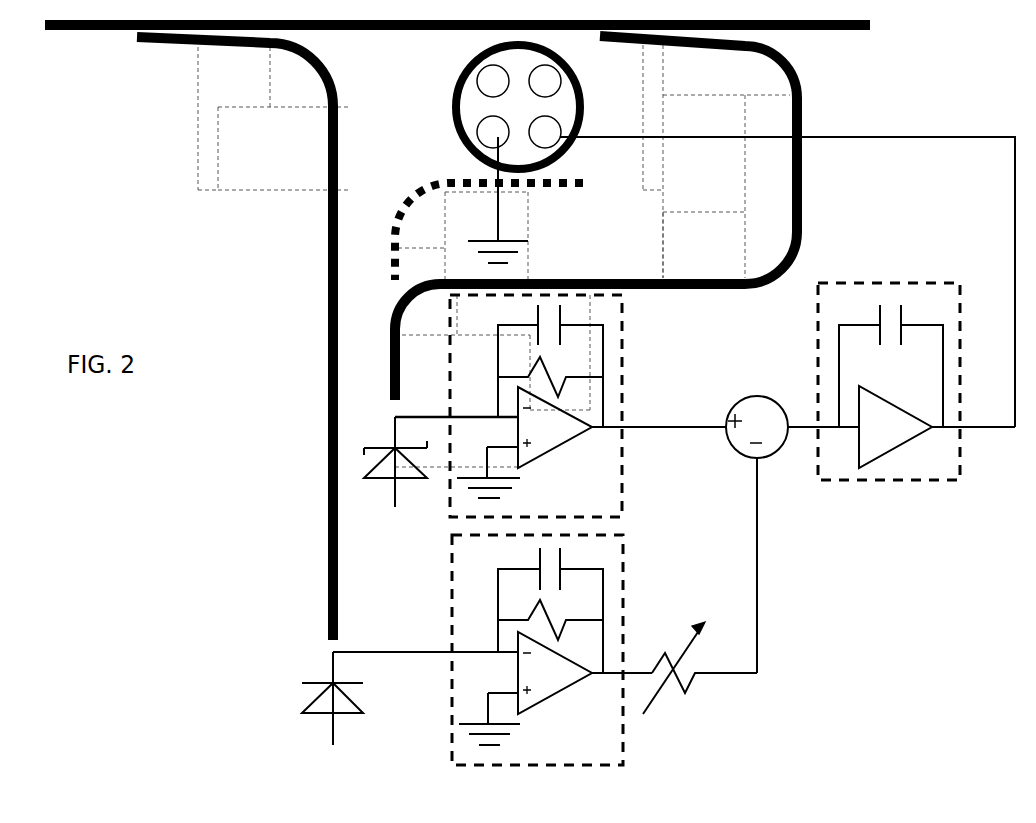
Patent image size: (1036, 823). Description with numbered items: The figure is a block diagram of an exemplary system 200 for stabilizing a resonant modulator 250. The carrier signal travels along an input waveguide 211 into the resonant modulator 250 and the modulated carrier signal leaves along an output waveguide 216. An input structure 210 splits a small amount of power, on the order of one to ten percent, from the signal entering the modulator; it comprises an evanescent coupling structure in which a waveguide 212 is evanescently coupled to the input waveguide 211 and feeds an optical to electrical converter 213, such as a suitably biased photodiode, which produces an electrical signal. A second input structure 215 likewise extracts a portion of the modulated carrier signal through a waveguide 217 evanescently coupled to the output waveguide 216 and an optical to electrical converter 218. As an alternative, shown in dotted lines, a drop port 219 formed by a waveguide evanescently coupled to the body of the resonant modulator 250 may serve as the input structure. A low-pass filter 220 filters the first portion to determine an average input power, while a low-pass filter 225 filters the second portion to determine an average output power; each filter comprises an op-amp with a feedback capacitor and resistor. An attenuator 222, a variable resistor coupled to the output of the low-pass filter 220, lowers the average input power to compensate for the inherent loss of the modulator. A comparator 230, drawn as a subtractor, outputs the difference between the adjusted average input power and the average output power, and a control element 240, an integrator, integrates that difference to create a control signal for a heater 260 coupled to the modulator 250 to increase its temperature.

The system 200 is at (138, 298).
The input structure 210 is at (216, 75).
The input waveguide 211 is at (358, 30).
The waveguide 212 is at (326, 100).
The optical to electrical (O/E) converter 213 is at (307, 705).
The input structure 215 is at (693, 53).
The output waveguide 216 is at (825, 33).
The waveguide 217 is at (793, 160).
The optical to electrical (O/E) converter 218 is at (400, 480).
The drop port 219 is at (555, 185).
The low-pass filter 220 is at (448, 720).
The attenuator 222 is at (687, 688).
The low-pass filter 225 is at (622, 477).
The comparator 230 is at (770, 458).
The control element 240 is at (930, 480).
The resonant modulator 250 is at (450, 97).
The heater 260 is at (575, 145).